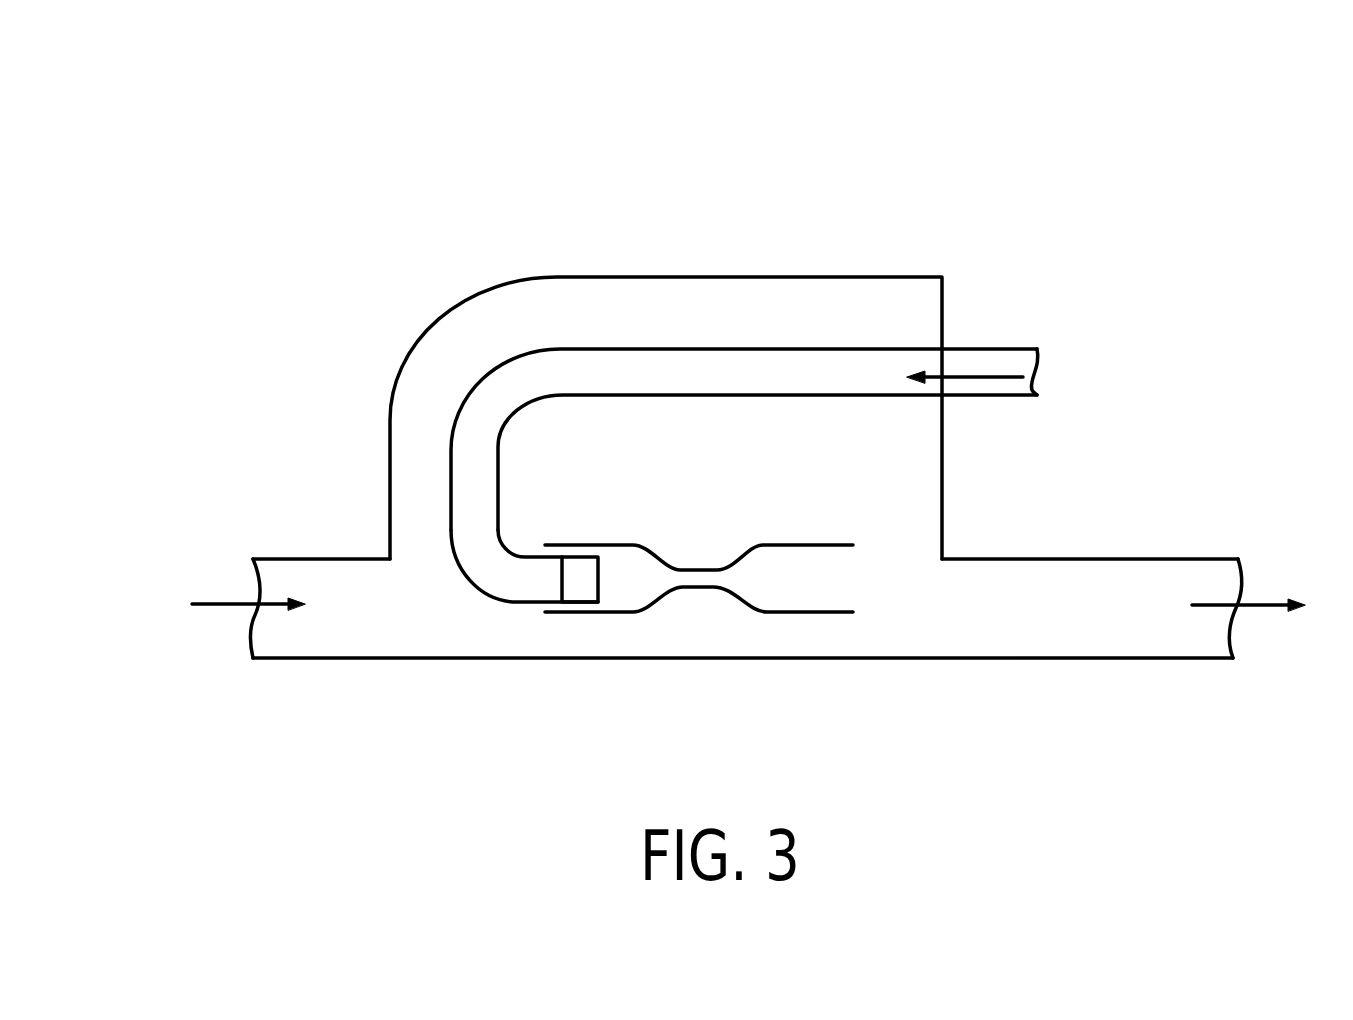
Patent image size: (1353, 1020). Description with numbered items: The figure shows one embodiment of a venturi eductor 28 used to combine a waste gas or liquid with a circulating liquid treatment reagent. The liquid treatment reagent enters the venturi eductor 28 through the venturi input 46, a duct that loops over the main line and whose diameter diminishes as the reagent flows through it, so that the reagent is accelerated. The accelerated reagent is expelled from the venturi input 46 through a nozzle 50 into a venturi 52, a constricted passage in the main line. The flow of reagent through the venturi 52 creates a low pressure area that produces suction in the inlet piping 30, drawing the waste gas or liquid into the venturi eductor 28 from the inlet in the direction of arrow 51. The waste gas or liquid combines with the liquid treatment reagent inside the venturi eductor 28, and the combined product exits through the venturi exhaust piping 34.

The venturi eductor 28 is at (757, 196).
The inlet piping 30 is at (305, 558).
The venturi exhaust piping 34 is at (1149, 506).
The venturi input 46 is at (992, 346).
The nozzle 50 is at (577, 583).
The arrow 51 is at (220, 603).
The venturi 52 is at (697, 588).